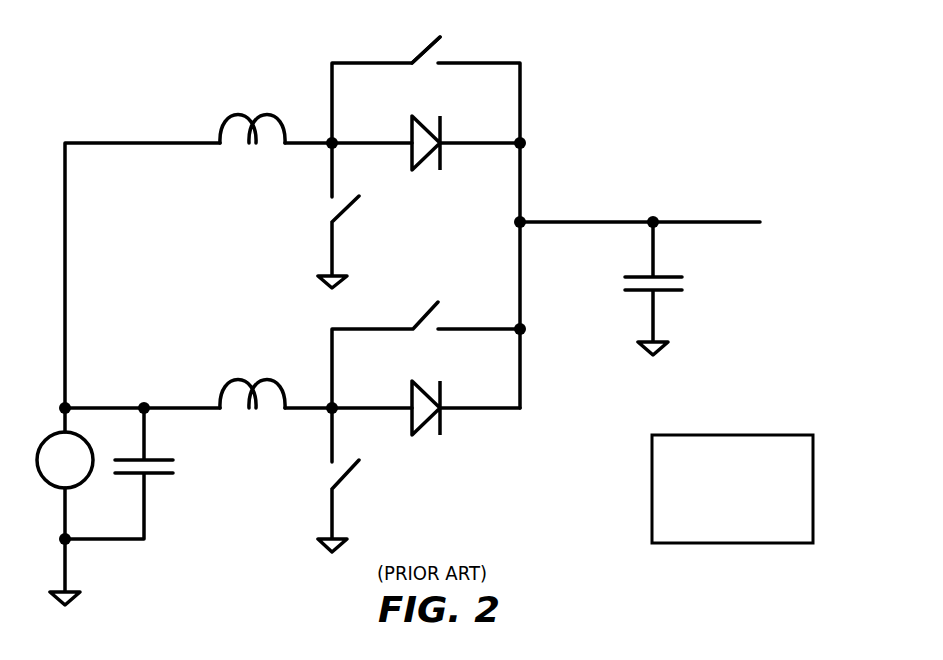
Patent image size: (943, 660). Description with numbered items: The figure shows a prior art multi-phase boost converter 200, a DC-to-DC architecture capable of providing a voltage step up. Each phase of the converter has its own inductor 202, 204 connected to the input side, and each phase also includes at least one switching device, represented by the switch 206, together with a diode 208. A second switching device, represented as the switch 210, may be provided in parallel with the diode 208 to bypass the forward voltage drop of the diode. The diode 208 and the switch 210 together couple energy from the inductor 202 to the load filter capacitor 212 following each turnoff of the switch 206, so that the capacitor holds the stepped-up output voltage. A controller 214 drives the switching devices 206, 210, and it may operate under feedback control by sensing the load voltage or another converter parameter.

The multi-phase boost converter 200 is at (787, 113).
The inductor 202 is at (252, 97).
The inductor 204 is at (247, 362).
The switch 206 is at (310, 203).
The diode 208 is at (426, 186).
The switch 210 is at (462, 50).
The load filter capacitor 212 is at (626, 308).
The controller 214 is at (732, 489).